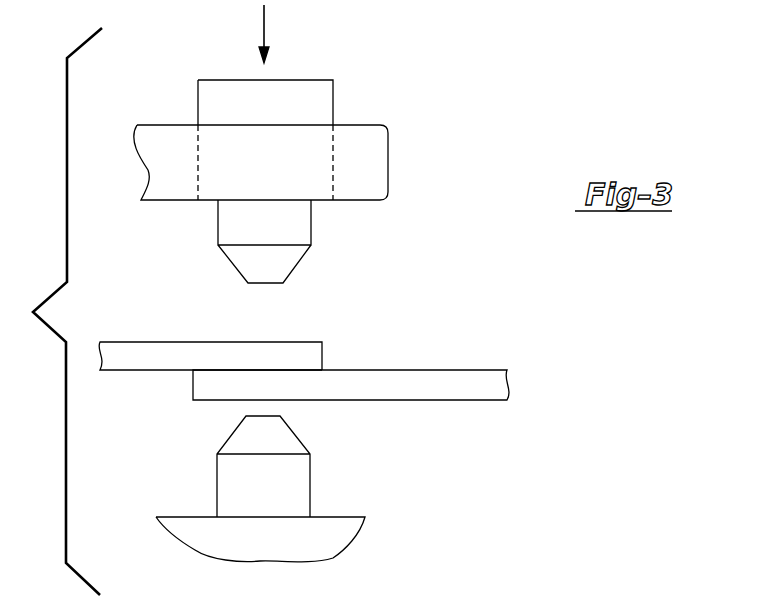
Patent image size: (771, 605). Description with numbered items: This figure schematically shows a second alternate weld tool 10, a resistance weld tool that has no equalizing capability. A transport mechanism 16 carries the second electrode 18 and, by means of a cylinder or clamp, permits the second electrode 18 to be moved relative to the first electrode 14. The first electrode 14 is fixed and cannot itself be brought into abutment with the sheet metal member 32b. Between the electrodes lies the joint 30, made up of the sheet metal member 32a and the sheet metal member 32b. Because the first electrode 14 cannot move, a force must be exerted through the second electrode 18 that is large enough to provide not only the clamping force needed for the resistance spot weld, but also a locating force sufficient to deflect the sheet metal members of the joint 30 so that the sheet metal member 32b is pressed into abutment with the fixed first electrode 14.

The weld tool 10 is at (290, 300).
The first electrode 14 is at (288, 484).
The transport mechanism 16 is at (311, 103).
The second electrode 18 is at (287, 222).
The joint 30 is at (323, 366).
The sheet metal member 32a is at (181, 357).
The sheet metal member 32b is at (388, 387).